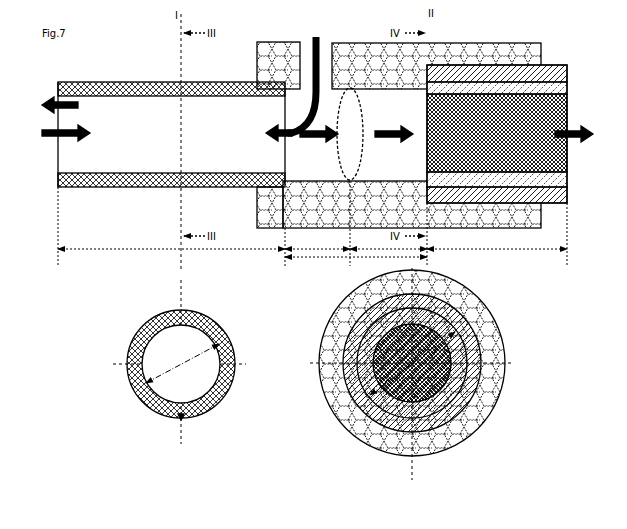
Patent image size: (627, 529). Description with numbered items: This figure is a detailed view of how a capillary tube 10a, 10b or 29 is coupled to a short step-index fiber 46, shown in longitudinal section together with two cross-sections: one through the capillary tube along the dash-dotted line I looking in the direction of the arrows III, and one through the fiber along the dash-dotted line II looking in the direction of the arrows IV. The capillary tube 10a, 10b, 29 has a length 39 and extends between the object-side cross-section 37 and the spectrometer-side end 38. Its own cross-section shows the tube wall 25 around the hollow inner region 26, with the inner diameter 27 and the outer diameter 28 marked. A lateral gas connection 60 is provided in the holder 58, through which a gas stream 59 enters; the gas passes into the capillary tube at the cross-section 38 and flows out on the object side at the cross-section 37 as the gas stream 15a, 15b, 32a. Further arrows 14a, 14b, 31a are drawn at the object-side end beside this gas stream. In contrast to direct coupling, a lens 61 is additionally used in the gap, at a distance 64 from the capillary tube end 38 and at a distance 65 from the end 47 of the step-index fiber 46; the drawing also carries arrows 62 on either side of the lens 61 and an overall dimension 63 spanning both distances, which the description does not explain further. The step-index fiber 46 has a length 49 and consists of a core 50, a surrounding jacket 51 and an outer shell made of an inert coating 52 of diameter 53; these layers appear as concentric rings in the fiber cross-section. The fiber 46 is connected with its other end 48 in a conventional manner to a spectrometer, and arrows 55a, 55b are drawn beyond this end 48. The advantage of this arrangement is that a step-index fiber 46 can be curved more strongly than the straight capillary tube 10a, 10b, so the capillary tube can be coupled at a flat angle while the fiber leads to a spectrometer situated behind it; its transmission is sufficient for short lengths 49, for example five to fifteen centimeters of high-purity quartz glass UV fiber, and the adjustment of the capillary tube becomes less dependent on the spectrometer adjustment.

The capillary tube 10a is at (171, 89).
The capillary tube 10b is at (171, 180).
The capillary tube 29 is at (68, 82).
The flow direction 14a is at (66, 133).
The flow direction 14b is at (66, 133).
The flow direction 31a is at (80, 130).
The gas stream 15a is at (60, 105).
The gas stream 15b is at (60, 105).
The gas stream 32a is at (80, 108).
The object-side cross-section 37 is at (60, 148).
The spectrometer-side end 38 is at (287, 162).
The length 39 is at (171, 243).
The step-index fiber 46 is at (549, 65).
The end of the step-index fiber 47 is at (505, 111).
The end 48 is at (569, 97).
The length 49 is at (497, 243).
The core 50 is at (569, 152).
The jacket 51 is at (571, 176).
The inert coating 52 is at (571, 194).
The diameter 53 is at (340, 306).
The outlet flow 55a is at (569, 130).
The outlet flow 55b is at (574, 134).
The holder 58 is at (335, 45).
The gas stream 59 is at (313, 38).
The lateral gas connection 60 is at (281, 43).
The lens 61 is at (360, 162).
The flow arrows 62 is at (319, 129).
The gap length 63 is at (356, 263).
The distance 64 is at (317, 243).
The distance 65 is at (388, 243).
The tube wall 25 is at (208, 320).
The hollow inner region 26 is at (212, 330).
The inner diameter 27 is at (220, 352).
The outer diameter 28 is at (181, 418).